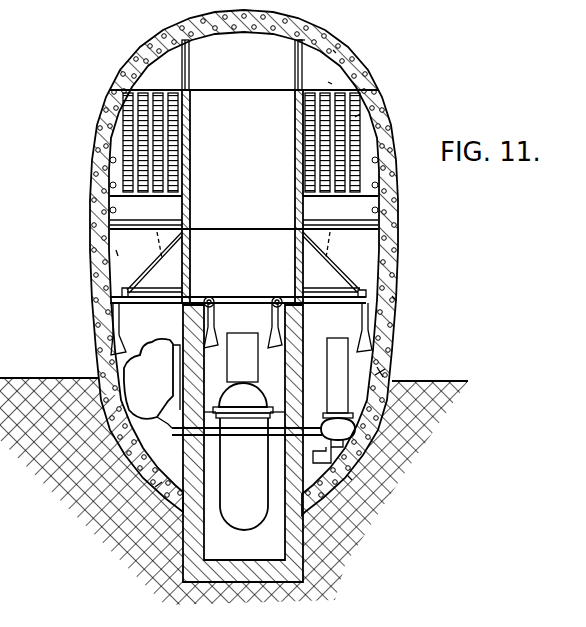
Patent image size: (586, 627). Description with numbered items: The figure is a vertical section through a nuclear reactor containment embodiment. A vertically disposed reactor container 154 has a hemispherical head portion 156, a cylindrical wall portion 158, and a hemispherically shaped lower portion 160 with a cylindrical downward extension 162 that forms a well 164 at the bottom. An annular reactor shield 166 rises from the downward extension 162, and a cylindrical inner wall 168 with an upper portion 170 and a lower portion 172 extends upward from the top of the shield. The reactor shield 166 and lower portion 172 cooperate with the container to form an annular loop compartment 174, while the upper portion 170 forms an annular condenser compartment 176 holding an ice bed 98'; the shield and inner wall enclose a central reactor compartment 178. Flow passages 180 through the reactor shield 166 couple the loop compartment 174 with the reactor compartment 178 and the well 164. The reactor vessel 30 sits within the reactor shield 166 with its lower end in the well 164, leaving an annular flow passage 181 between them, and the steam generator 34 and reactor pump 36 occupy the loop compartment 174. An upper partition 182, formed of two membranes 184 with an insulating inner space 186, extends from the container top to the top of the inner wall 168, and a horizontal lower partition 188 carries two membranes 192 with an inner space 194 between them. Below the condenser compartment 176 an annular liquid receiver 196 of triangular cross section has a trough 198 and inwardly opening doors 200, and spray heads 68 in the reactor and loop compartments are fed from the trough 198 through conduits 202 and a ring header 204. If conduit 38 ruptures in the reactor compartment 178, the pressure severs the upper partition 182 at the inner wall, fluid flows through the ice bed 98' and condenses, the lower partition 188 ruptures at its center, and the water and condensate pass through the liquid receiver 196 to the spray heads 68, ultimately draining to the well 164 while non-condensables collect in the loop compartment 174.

The reactor vessel 30 is at (250, 495).
The steam generator 34 is at (133, 382).
The reactor pump 36 is at (347, 430).
The conduit 38 is at (290, 435).
The spray heads 68 is at (362, 350).
The ice bed 98' is at (390, 103).
The reactor container 154 is at (452, 262).
The hemispherical head portion 156 is at (335, 53).
The cylindrical wall portion 158 is at (392, 298).
The hemispherically shaped lower portion 160 is at (350, 477).
The downward extension 162 is at (257, 548).
The well 164 is at (305, 583).
The reactor shield 166 is at (181, 351).
The inner wall 168 is at (292, 264).
The upper portion of inner wall 170 is at (296, 157).
The lower portion of inner wall 172 is at (278, 296).
The loop compartment 174 is at (386, 372).
The condenser compartment 176 is at (330, 82).
The reactor compartment 178 is at (232, 104).
The flow passages 180 is at (160, 485).
The annular flow passage 181 is at (214, 413).
The upper partition 182 is at (295, 72).
The membranes 184 is at (296, 47).
The inner space 186 is at (306, 55).
The lower partition 188 is at (442, 212).
The membranes 192 is at (382, 222).
The inner space 194 is at (303, 227).
The liquid receiver 196 is at (118, 255).
The trough 198 is at (130, 302).
The doors 200 is at (190, 241).
The conduits 202 is at (277, 319).
The ring header 204 is at (232, 297).